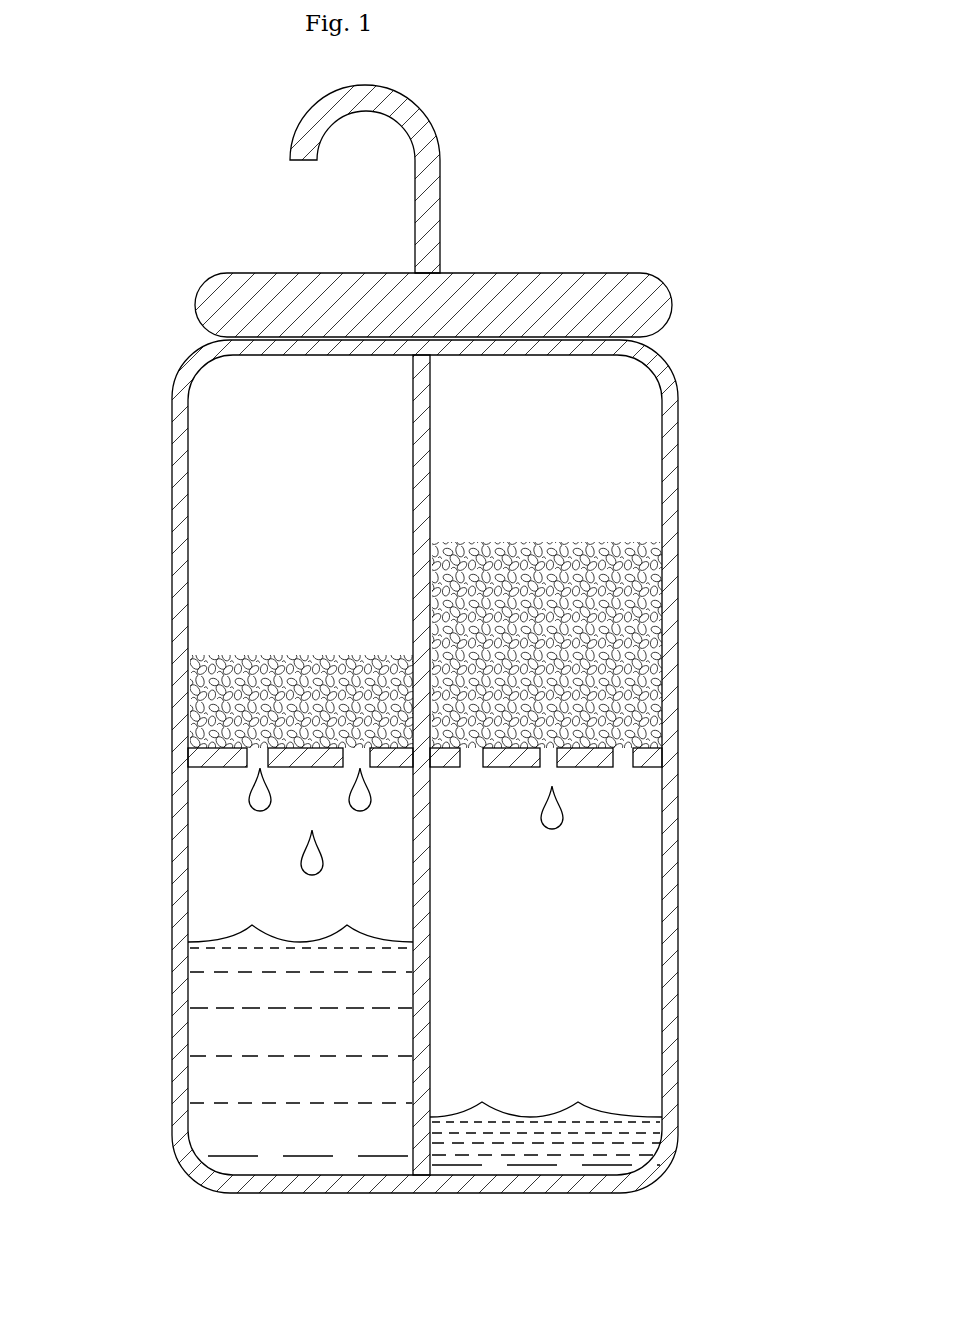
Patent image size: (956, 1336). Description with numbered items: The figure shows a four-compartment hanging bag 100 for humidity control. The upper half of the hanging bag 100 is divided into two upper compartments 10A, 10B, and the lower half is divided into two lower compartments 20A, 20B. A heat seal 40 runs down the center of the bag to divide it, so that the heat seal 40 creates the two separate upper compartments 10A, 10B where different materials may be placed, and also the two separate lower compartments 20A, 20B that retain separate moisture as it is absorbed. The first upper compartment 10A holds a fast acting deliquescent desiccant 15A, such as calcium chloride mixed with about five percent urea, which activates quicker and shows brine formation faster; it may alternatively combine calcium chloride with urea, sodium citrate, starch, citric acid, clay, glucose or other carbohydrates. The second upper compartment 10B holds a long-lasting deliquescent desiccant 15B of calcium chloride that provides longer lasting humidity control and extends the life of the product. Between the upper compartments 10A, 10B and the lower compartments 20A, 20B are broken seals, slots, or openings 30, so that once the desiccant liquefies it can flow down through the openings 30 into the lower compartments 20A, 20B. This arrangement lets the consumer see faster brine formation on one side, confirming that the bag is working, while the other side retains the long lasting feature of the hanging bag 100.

The hanging bag 100 is at (693, 250).
The heat seal 40 is at (433, 407).
The first upper compartment 10A is at (233, 556).
The second upper compartment 10B is at (640, 508).
The fast acting deliquescent desiccant 15A is at (217, 713).
The long-lasting deliquescent desiccant 15B is at (640, 682).
The openings 30 is at (345, 766).
The first lower compartment 20A is at (207, 897).
The second lower compartment 20B is at (637, 978).